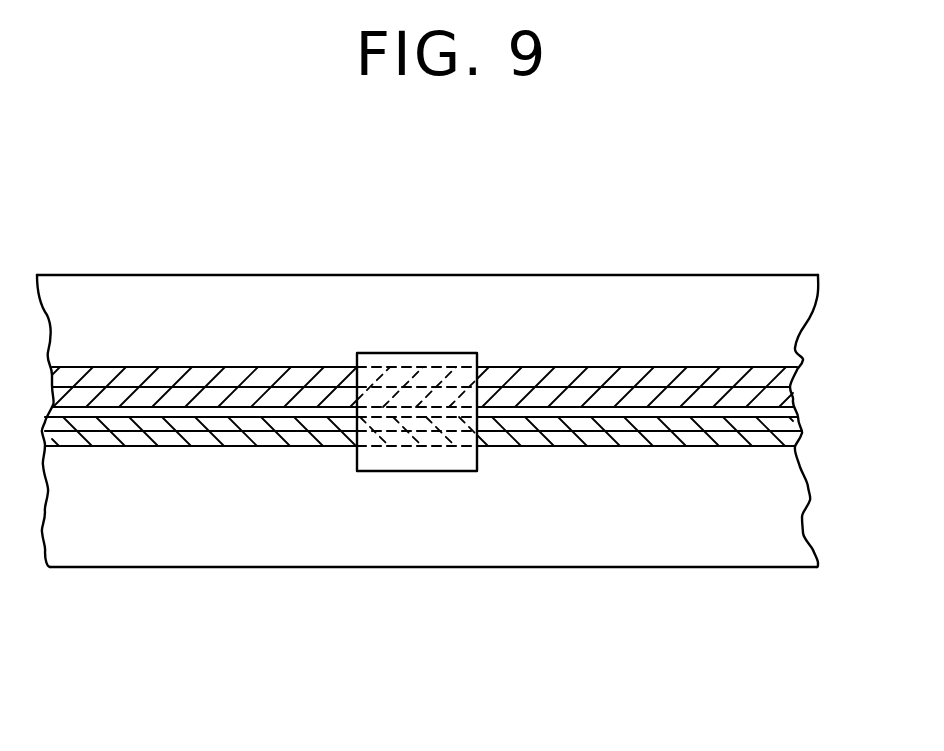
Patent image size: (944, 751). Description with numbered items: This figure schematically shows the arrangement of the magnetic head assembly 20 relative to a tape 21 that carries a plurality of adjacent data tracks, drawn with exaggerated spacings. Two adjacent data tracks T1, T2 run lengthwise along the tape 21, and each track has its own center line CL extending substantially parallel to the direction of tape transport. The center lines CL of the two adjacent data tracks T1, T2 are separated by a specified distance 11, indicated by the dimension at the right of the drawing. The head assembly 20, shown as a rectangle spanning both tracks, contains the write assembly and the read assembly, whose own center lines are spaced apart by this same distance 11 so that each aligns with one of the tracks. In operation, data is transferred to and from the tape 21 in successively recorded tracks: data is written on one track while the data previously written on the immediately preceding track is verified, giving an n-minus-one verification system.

The data track T1 is at (233, 383).
The data track T2 is at (217, 437).
The center line CL is at (608, 387).
The head assembly 20 is at (412, 453).
The tape 21 is at (427, 421).
The distance 11 is at (868, 340).